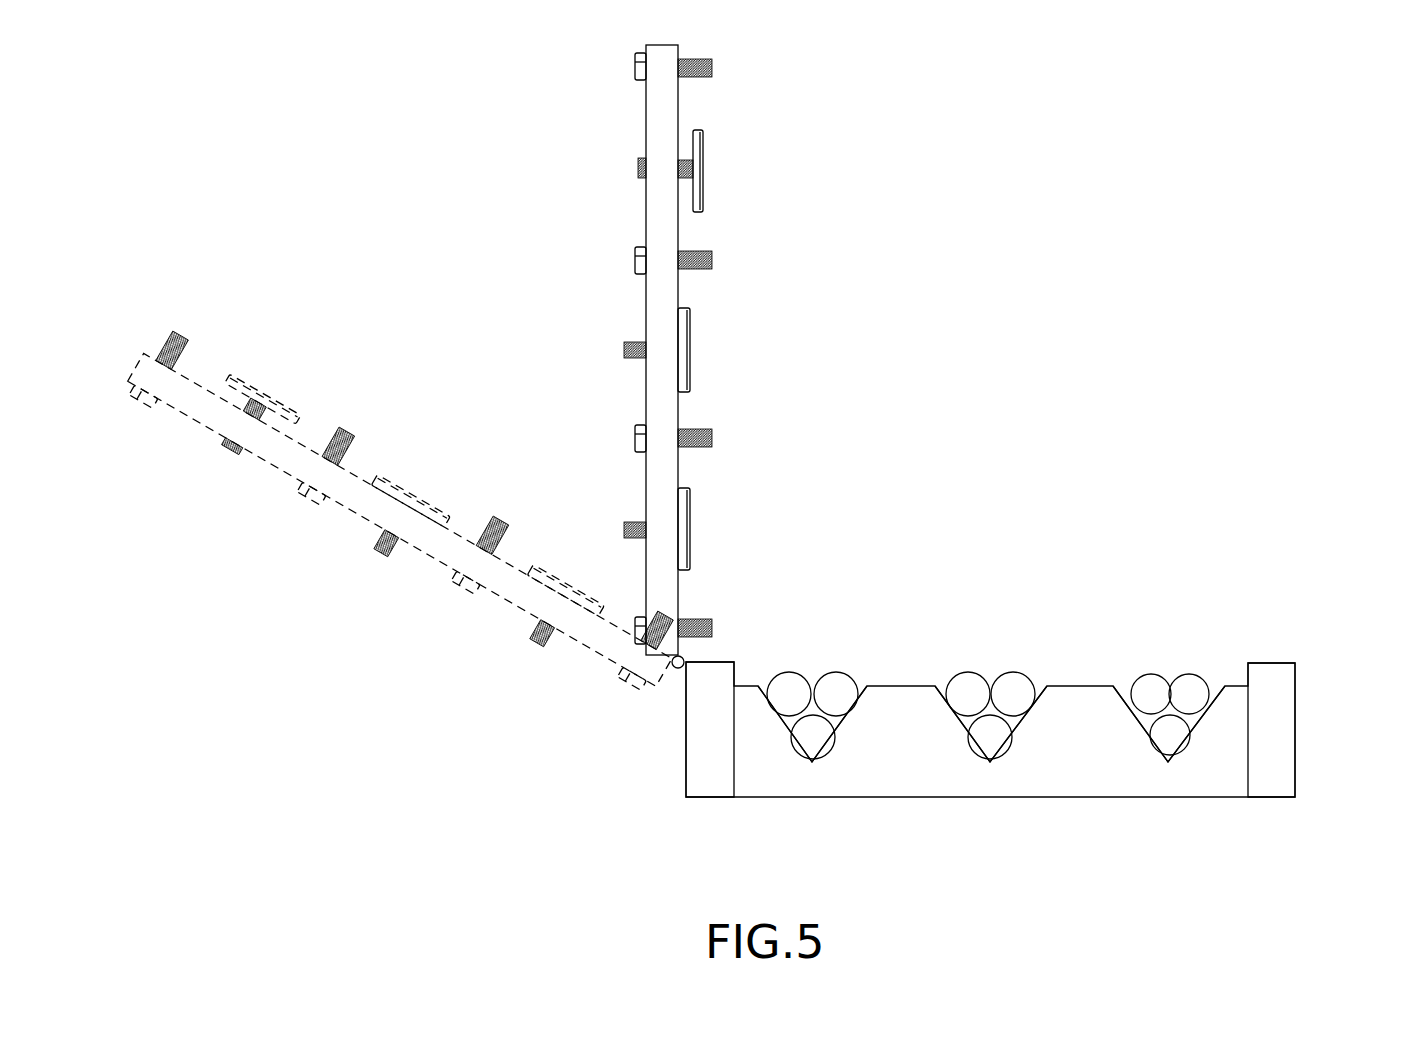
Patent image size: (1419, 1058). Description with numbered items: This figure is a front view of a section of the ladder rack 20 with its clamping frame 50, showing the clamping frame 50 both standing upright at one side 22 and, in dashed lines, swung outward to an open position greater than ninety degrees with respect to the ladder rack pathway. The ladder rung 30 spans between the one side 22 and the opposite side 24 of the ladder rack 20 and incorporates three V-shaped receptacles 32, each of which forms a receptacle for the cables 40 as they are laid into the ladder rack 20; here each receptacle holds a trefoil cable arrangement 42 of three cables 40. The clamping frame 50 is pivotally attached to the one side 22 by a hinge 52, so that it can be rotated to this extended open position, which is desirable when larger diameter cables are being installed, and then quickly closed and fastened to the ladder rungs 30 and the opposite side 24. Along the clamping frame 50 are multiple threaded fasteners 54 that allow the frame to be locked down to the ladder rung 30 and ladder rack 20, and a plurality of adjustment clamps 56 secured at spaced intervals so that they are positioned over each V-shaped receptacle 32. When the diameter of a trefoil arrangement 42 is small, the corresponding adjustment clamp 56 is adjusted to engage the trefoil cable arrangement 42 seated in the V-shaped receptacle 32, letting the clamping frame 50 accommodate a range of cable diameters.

The ladder rack 20 is at (1230, 306).
The side of the ladder rack 22 is at (710, 752).
The opposite side of the ladder rack 24 is at (1280, 723).
The ladder rung 30 is at (895, 755).
The V-shaped receptacle 32 is at (815, 765).
The cable 40 is at (1151, 705).
The trefoil cable arrangement 42 is at (1175, 688).
The clamping frame 50 is at (646, 193).
The hinge 52 is at (672, 664).
The threaded fastener 54 is at (635, 64).
The adjustment clamp 56 is at (690, 333).